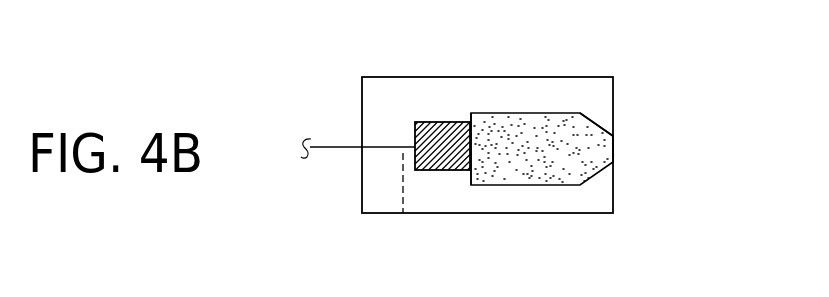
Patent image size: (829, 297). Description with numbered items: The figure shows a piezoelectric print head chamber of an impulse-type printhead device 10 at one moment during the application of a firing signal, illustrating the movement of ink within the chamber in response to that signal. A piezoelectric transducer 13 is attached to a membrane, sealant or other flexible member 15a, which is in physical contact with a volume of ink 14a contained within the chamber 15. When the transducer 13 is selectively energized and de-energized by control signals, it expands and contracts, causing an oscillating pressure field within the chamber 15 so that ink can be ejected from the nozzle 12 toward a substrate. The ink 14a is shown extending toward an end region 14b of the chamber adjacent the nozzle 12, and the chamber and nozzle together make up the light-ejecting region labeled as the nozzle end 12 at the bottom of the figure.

The semiconductor laser device / package 10 is at (397, 77).
The nozzle 12 is at (617, 218).
The piezoelectric transducer 13 is at (438, 122).
The volume of ink 14a is at (547, 132).
The light emitting end face of optical member 14b is at (613, 152).
The chamber 15 is at (581, 113).
The flexible member 15a is at (472, 142).